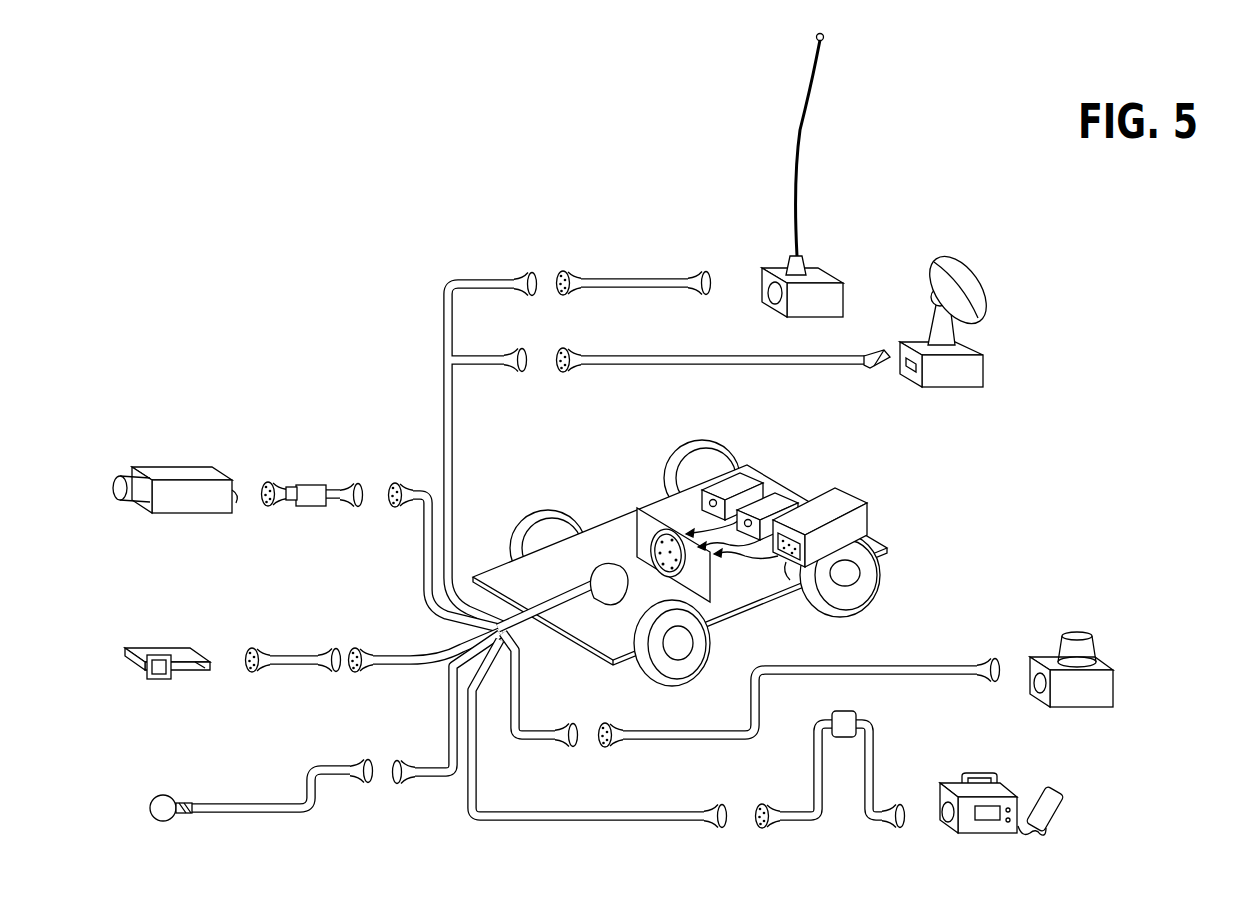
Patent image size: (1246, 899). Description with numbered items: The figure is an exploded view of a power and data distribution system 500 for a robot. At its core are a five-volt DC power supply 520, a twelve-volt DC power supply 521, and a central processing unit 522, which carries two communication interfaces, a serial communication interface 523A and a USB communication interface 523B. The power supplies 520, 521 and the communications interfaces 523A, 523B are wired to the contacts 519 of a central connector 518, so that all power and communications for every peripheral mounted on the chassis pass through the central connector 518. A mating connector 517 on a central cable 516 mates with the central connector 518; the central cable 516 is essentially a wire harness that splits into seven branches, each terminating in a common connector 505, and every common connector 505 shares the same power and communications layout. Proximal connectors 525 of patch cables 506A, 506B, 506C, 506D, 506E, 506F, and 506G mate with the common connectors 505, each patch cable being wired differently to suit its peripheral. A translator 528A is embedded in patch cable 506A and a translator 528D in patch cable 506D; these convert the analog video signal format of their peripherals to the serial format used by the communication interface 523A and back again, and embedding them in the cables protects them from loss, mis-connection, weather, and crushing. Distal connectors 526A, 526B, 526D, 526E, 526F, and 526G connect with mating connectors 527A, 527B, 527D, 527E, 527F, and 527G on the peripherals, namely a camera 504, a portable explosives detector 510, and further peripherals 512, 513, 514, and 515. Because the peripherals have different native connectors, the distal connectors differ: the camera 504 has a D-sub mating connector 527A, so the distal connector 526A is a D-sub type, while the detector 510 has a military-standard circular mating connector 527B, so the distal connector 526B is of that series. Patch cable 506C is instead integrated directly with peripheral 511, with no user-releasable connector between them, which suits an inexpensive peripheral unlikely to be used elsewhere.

The distribution system 500 is at (302, 126).
The camera 504 is at (166, 468).
The common connector 505 is at (530, 271).
The patch cable 506A is at (290, 490).
The patch cable 506B is at (298, 653).
The patch cable 506C is at (318, 768).
The patch cable 506D is at (812, 745).
The patch cable 506E is at (895, 664).
The patch cable 506F is at (722, 356).
The patch cable 506G is at (632, 278).
The portable explosives detector 510 is at (165, 648).
The peripheral 511 is at (185, 800).
The peripheral 512 is at (966, 782).
The peripheral 513 is at (1083, 632).
The peripheral 514 is at (940, 262).
The peripheral 515 is at (816, 270).
The central cable 516 is at (568, 603).
The mating connector 517 is at (605, 562).
The central connector 518 is at (660, 568).
The contacts 519 is at (710, 600).
The 5 VDC power supply 520 is at (740, 482).
The 12 VDC power supply 521 is at (780, 495).
The central processing unit 522 is at (850, 495).
The RS-232 communication interface 523A is at (792, 540).
The USB communication interface 523B is at (788, 562).
The proximal connector 525 is at (565, 270).
The distal connector 526A is at (268, 482).
The distal connector 526B is at (250, 648).
The distal connector 526D is at (900, 803).
The distal connector 526E is at (993, 657).
The distal connector 526F is at (868, 354).
The distal connector 526G is at (706, 270).
The mating connector 527A is at (238, 505).
The mating connector 527B is at (205, 664).
The mating connector 527D is at (942, 790).
The mating connector 527E is at (1045, 658).
The mating connector 527F is at (907, 349).
The mating connector 527G is at (774, 275).
The translator 528A is at (305, 507).
The translator 528D is at (840, 738).